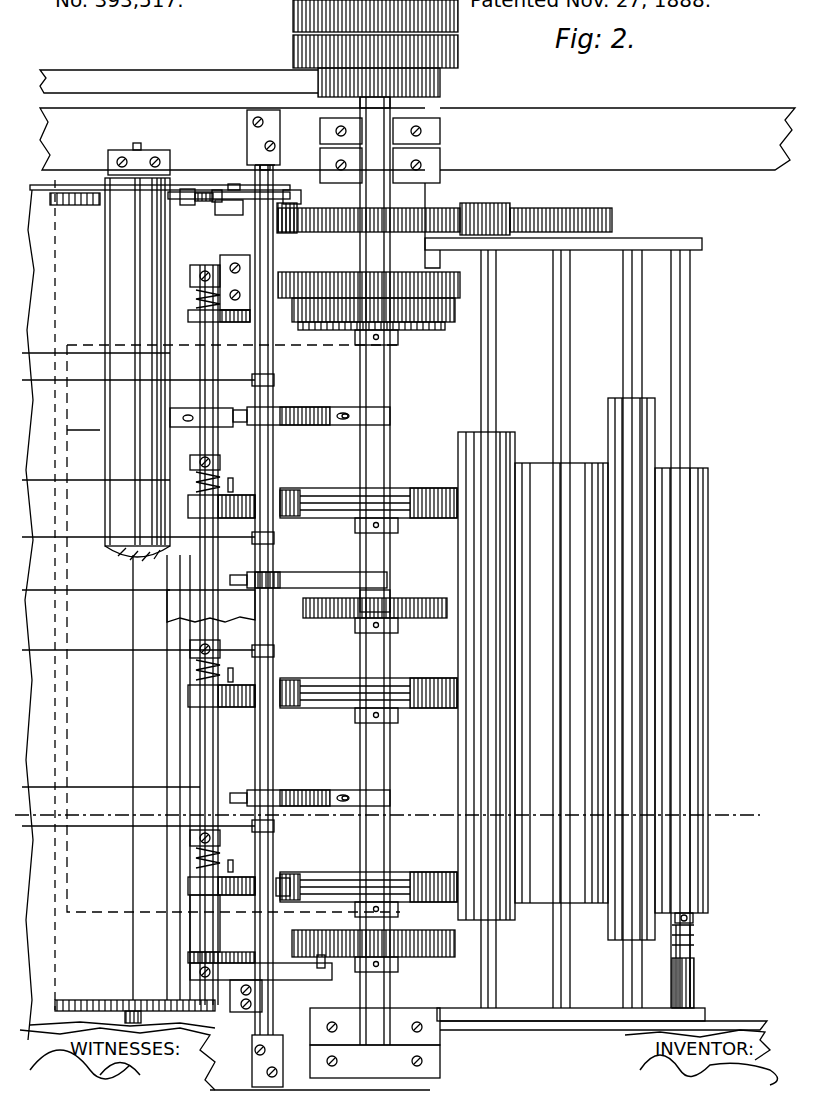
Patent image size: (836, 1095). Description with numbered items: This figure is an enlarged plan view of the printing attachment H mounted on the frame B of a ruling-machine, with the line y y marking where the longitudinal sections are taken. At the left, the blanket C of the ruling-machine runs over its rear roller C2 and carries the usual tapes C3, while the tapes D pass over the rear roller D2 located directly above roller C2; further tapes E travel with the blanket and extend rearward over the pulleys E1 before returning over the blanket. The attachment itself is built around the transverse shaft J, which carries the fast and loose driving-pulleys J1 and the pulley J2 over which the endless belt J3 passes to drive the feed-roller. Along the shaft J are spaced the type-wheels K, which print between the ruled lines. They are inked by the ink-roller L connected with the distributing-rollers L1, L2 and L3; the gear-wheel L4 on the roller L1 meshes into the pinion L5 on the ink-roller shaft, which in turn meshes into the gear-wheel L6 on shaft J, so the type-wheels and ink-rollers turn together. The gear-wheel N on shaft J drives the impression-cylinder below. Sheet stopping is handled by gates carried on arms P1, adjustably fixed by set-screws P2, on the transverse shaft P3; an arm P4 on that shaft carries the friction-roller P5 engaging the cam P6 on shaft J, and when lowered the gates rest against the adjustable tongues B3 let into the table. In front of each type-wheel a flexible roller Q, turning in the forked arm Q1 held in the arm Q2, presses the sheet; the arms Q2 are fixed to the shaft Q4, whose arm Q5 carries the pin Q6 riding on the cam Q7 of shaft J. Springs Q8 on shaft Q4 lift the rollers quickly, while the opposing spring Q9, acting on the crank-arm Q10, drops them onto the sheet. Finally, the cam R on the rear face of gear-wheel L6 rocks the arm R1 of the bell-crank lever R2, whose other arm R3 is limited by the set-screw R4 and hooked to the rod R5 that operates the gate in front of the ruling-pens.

The fast and loose driving-pulleys J1 is at (387, 48).
The pulley J2 is at (430, 98).
The endless belt J3 is at (195, 74).
The frame B is at (170, 605).
The transverse shaft J is at (392, 380).
The cam R is at (305, 185).
The arm of bell-crank lever R1 is at (288, 201).
The bell-crank lever R2 is at (248, 205).
The arm of bell-crank lever R3 is at (210, 210).
The set-screw R4 is at (190, 210).
The rod R5 is at (42, 183).
The blanket C is at (97, 609).
The rear roller C2 is at (72, 210).
The tapes C3 is at (88, 592).
The tapes D is at (30, 352).
The rear roller D2 is at (83, 430).
The tapes E is at (38, 370).
The pulleys E1 is at (276, 380).
The line y y is at (387, 813).
The gear-wheel L6 is at (433, 210).
The pinion L5 is at (500, 208).
The gear-wheel L4 is at (584, 210).
The printing attachment H is at (607, 629).
The gear-wheel N is at (462, 282).
The ink-roller L is at (525, 430).
The distributing-roller L1 is at (582, 456).
The distributing-roller L2 is at (630, 614).
The distributing-roller L3 is at (678, 634).
The shaft Q4 is at (220, 752).
The transverse shaft P3 is at (275, 740).
The crank-arm Q10 is at (190, 262).
The spring Q9 is at (190, 306).
The springs Q8 is at (222, 478).
The arm Q2 is at (235, 890).
The pin or friction-roller Q6 is at (340, 990).
The arm Q5 is at (292, 984).
The cam Q7 is at (410, 966).
The type-wheels K is at (432, 488).
The roller Q is at (288, 488).
The arm Q1 is at (279, 875).
The arm P1 is at (322, 406).
The set-screw P2 is at (344, 426).
The arm P4 is at (328, 578).
The friction-roller P5 is at (392, 594).
The cam P6 is at (332, 620).
The adjustable tongues B3 is at (183, 408).